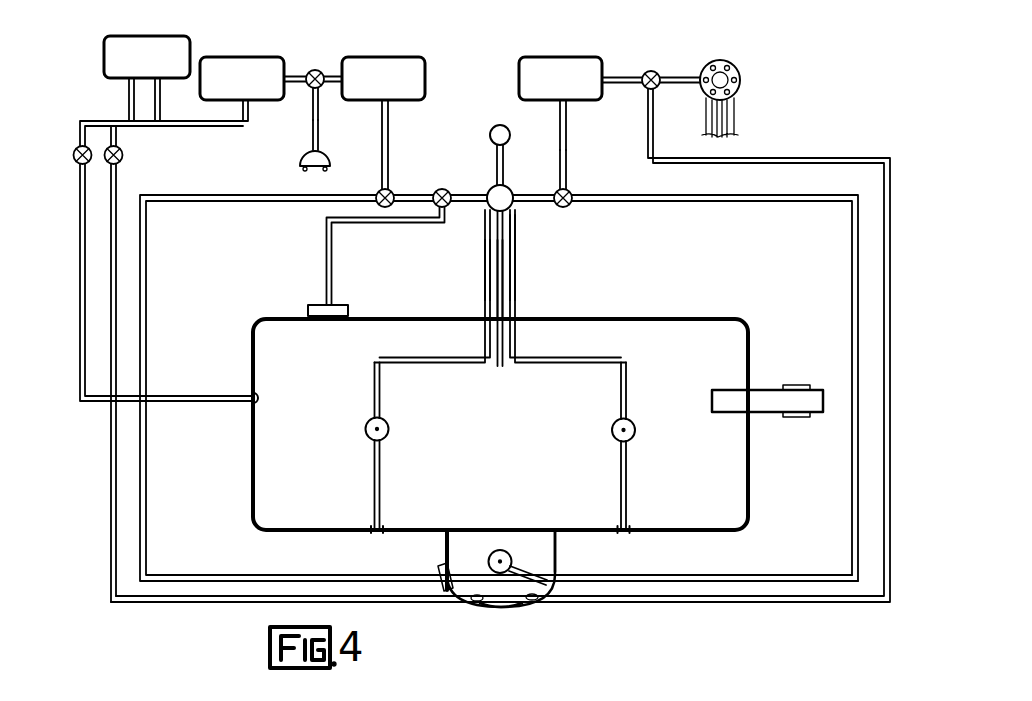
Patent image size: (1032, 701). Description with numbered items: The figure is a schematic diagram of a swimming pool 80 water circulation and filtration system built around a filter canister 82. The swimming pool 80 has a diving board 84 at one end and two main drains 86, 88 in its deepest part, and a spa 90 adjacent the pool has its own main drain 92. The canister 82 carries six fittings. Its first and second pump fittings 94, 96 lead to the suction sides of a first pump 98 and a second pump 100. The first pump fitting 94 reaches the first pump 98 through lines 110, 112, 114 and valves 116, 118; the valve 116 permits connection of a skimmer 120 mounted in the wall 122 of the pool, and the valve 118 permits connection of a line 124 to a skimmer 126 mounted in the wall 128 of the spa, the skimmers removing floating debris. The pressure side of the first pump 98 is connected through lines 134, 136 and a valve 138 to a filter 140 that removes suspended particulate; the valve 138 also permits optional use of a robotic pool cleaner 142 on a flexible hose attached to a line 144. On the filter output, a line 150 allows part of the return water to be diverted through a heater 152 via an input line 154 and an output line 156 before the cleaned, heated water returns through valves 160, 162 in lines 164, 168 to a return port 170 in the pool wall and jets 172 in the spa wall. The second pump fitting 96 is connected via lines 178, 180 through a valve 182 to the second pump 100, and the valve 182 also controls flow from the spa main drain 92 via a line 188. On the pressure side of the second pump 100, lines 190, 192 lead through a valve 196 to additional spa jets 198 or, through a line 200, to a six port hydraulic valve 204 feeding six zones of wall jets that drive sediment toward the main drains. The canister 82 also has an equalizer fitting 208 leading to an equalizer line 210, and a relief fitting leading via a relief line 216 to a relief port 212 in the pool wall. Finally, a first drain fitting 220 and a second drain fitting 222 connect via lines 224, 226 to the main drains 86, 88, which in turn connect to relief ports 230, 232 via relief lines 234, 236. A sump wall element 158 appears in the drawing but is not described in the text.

The swimming pool 80 is at (513, 448).
The canister 82 is at (489, 190).
The diving board 84 is at (722, 390).
The main drain 86 is at (367, 420).
The main drain 88 is at (616, 422).
The spa 90 is at (508, 602).
The main drain 92 is at (497, 550).
The first pump fitting 94 is at (488, 210).
The second pump fitting 96 is at (513, 192).
The first pump 98 is at (392, 57).
The second pump 100 is at (565, 57).
The line 110 is at (460, 204).
The line 112 is at (406, 203).
The line 114 is at (382, 132).
The valve 116 is at (445, 190).
The valve 118 is at (378, 192).
The skimmer 120 is at (316, 305).
The wall 122 is at (520, 210).
The line 124 is at (147, 214).
The skimmer 126 is at (338, 218).
The wall 128 is at (496, 610).
The line 134 is at (337, 76).
The line 136 is at (311, 90).
The valve 138 is at (312, 70).
The filter 140 is at (250, 57).
The robotic pool cleaner 142 is at (302, 165).
The line 144 is at (312, 135).
The line 150 is at (176, 128).
The heater 152 is at (168, 36).
The input line 154 is at (160, 108).
The output line 156 is at (129, 98).
The sump wall 158 is at (552, 548).
The valve 160 is at (76, 148).
The valve 162 is at (121, 162).
The line 164 is at (79, 232).
The line 168 is at (110, 258).
The return port 170 is at (290, 380).
The jets 172 is at (477, 600).
The line 178 is at (558, 190).
The line 180 is at (567, 118).
The valve 182 is at (570, 190).
The line 188 is at (851, 298).
The line 190 is at (612, 76).
The line 192 is at (855, 158).
The valve 196 is at (651, 71).
The spa jets 198 is at (548, 586).
The line 200 is at (680, 76).
The six port hydraulic valve 204 is at (732, 64).
The equalizer fitting 208 is at (496, 168).
The equalizer line 210 is at (491, 130).
The relief port 212 is at (498, 366).
The relief line 216 is at (505, 288).
The first drain fitting 220 is at (486, 238).
The second drain fitting 222 is at (511, 213).
The line 224 is at (487, 300).
The line 226 is at (512, 300).
The relief port 230 is at (376, 534).
The relief port 232 is at (626, 534).
The relief line 234 is at (373, 497).
The relief line 236 is at (627, 497).